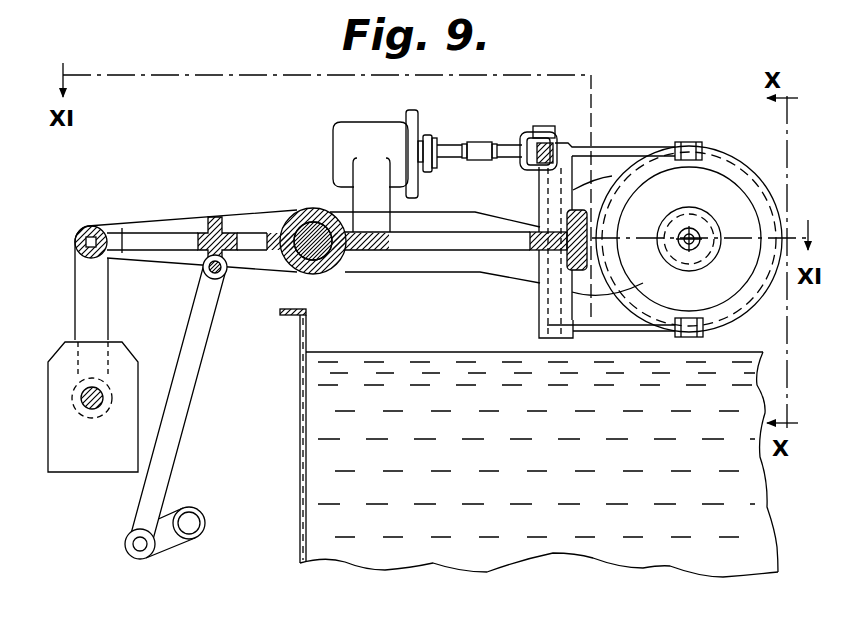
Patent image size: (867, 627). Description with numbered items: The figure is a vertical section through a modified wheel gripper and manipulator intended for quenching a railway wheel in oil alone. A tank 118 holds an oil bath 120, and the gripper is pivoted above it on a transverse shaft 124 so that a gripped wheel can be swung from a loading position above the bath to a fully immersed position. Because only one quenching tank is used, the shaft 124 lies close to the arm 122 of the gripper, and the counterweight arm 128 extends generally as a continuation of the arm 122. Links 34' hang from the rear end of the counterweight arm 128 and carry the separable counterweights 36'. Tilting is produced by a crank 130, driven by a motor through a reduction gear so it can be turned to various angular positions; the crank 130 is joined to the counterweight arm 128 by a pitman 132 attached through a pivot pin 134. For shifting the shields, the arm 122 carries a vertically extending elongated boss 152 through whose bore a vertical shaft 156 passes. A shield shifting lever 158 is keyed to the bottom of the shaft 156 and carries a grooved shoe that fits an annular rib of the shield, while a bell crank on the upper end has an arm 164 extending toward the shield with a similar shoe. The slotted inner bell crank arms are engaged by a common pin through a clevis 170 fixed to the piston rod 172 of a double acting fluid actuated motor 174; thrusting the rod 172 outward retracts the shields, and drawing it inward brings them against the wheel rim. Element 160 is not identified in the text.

The tank 118 is at (300, 458).
The oil bath 120 is at (534, 444).
The arm 122 is at (405, 262).
The transverse shaft 124 is at (297, 216).
The counterweight arm 128 is at (172, 221).
The crank 130 is at (168, 540).
The pitman 132 is at (183, 413).
The pivot pin 134 is at (224, 278).
The links 34' is at (116, 291).
The separable counterweights 36' is at (93, 431).
The elongated boss 152 is at (540, 294).
The vertical shaft 156 is at (540, 312).
The shield shifting lever 158 is at (645, 333).
The strap clamp block 160 is at (703, 333).
The bell crank arm 164 is at (610, 145).
The clevis 170 is at (521, 135).
The piston rod 172 is at (452, 148).
The double acting fluid actuated motor 174 is at (368, 140).